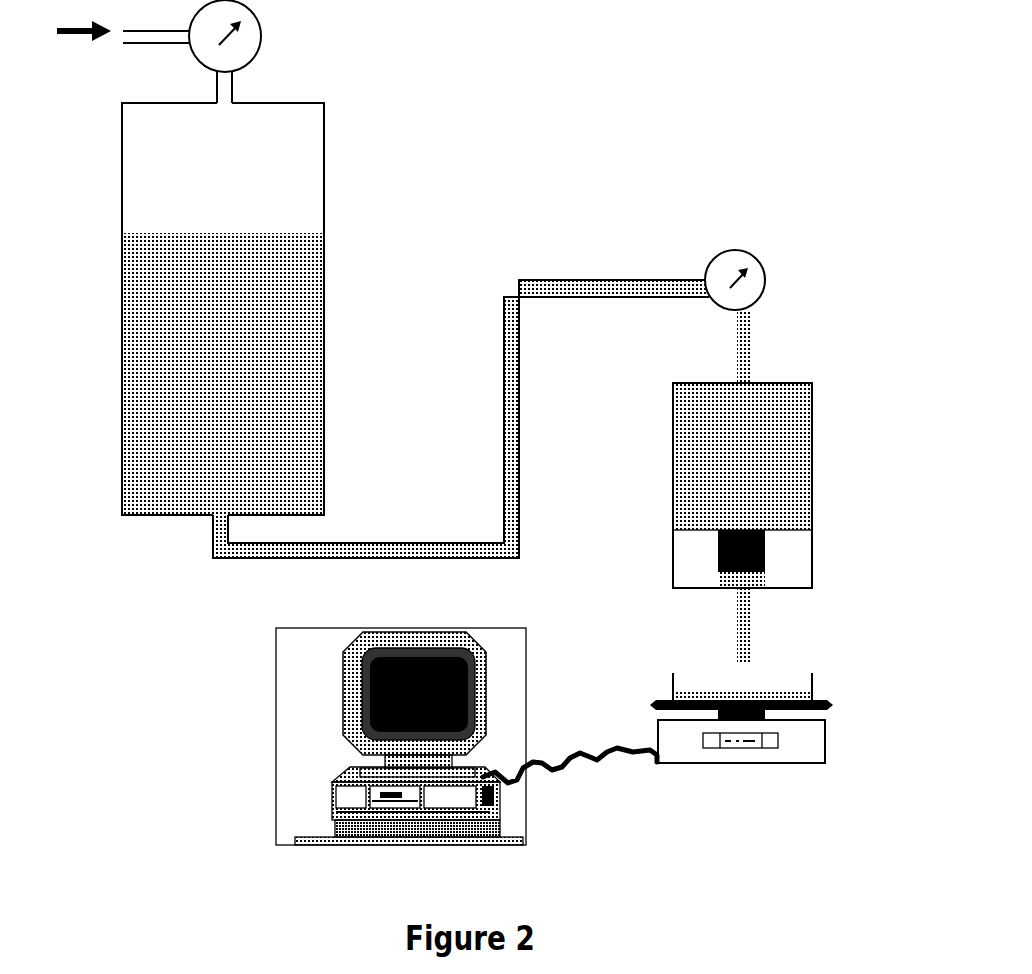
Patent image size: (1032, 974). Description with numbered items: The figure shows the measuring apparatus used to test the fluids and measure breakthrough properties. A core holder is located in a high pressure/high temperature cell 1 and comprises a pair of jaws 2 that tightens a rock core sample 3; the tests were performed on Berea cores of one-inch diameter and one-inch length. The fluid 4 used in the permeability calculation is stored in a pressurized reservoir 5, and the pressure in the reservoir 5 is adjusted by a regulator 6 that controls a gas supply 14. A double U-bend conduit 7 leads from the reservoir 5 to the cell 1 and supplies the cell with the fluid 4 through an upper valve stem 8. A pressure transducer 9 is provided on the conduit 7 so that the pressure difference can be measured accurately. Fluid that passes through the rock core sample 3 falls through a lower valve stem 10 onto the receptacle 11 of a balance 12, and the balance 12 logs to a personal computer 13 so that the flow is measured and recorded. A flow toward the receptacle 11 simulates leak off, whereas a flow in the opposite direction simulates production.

The high pressure/high temperature cell 1 is at (783, 477).
The jaws 2 is at (775, 549).
The rock core sample 3 is at (790, 573).
The fluid 4 is at (170, 397).
The pressurized reservoir 5 is at (289, 309).
The regulator 6 is at (284, 51).
The double U-bend conduit 7 is at (461, 419).
The upper valve stem 8 is at (733, 340).
The pressure transducer 9 is at (772, 268).
The lower valve stem 10 is at (735, 618).
The receptacle 11 is at (812, 690).
The balance 12 is at (788, 740).
The personal computer 13 is at (500, 798).
The gas supply 14 is at (123, 55).